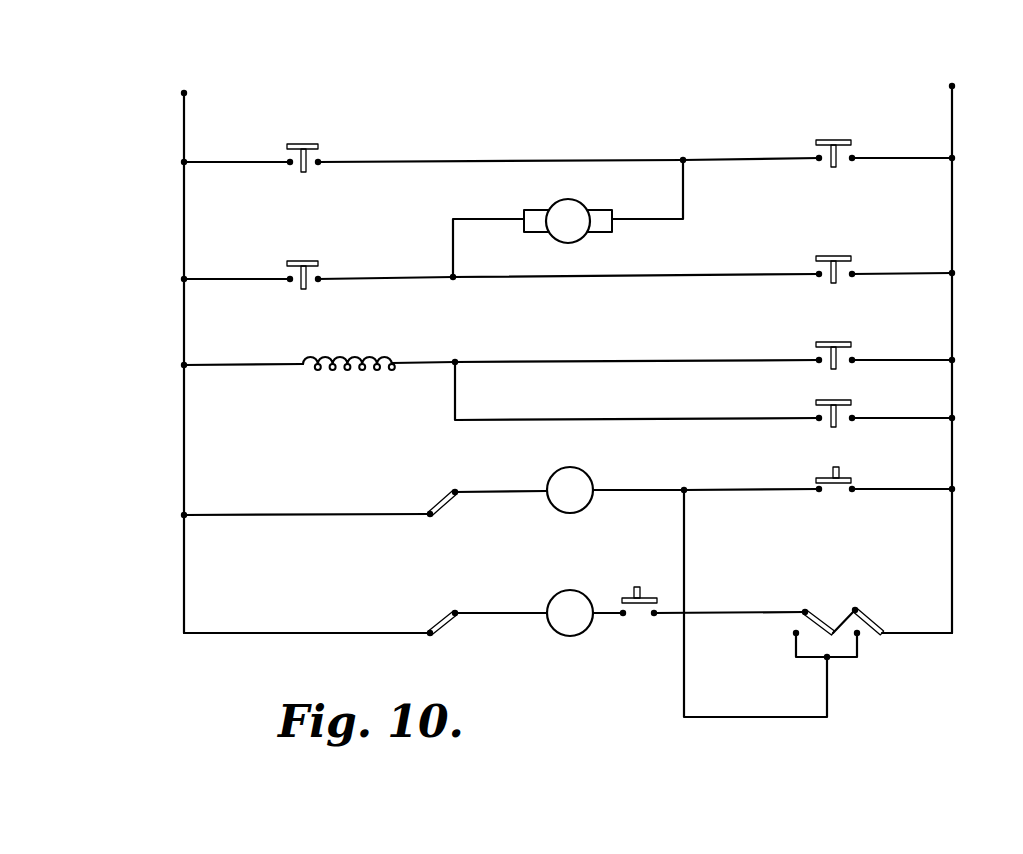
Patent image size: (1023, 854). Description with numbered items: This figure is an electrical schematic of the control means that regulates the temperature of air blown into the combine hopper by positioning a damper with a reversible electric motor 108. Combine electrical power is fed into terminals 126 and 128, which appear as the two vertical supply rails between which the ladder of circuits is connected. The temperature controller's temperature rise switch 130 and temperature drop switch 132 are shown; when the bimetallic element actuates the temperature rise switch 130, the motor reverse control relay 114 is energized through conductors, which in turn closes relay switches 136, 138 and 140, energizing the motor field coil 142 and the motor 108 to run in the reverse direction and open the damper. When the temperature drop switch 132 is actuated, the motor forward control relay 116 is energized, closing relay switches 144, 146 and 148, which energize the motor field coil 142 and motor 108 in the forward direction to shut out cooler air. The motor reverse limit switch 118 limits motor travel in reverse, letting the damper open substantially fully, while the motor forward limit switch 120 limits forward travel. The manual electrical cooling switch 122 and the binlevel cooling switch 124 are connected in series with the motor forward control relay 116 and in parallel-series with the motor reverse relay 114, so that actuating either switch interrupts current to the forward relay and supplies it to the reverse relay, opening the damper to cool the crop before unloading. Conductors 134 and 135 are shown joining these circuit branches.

The reversible electric motor 108 is at (584, 204).
The motor reverse control relay 114 is at (553, 473).
The motor forward control relay 116 is at (562, 594).
The motor reverse limit switch 118 is at (444, 499).
The motor forward limit switch 120 is at (444, 619).
The manual electric cooling switch 122 is at (818, 607).
The binlevel electric cooling switch 124 is at (872, 620).
The terminal 126 is at (184, 93).
The terminal 128 is at (952, 86).
The temperature rise switch 130 is at (851, 480).
The temperature drop switch 132 is at (656, 600).
The conductor 134 is at (762, 465).
The conductor 135 is at (648, 491).
The relay switch 136 is at (318, 144).
The relay switch 138 is at (851, 257).
The relay switch 140 is at (851, 343).
The motor field coil 142 is at (392, 362).
The relay switch 144 is at (851, 141).
The relay switch 146 is at (318, 261).
The relay switch 148 is at (851, 401).